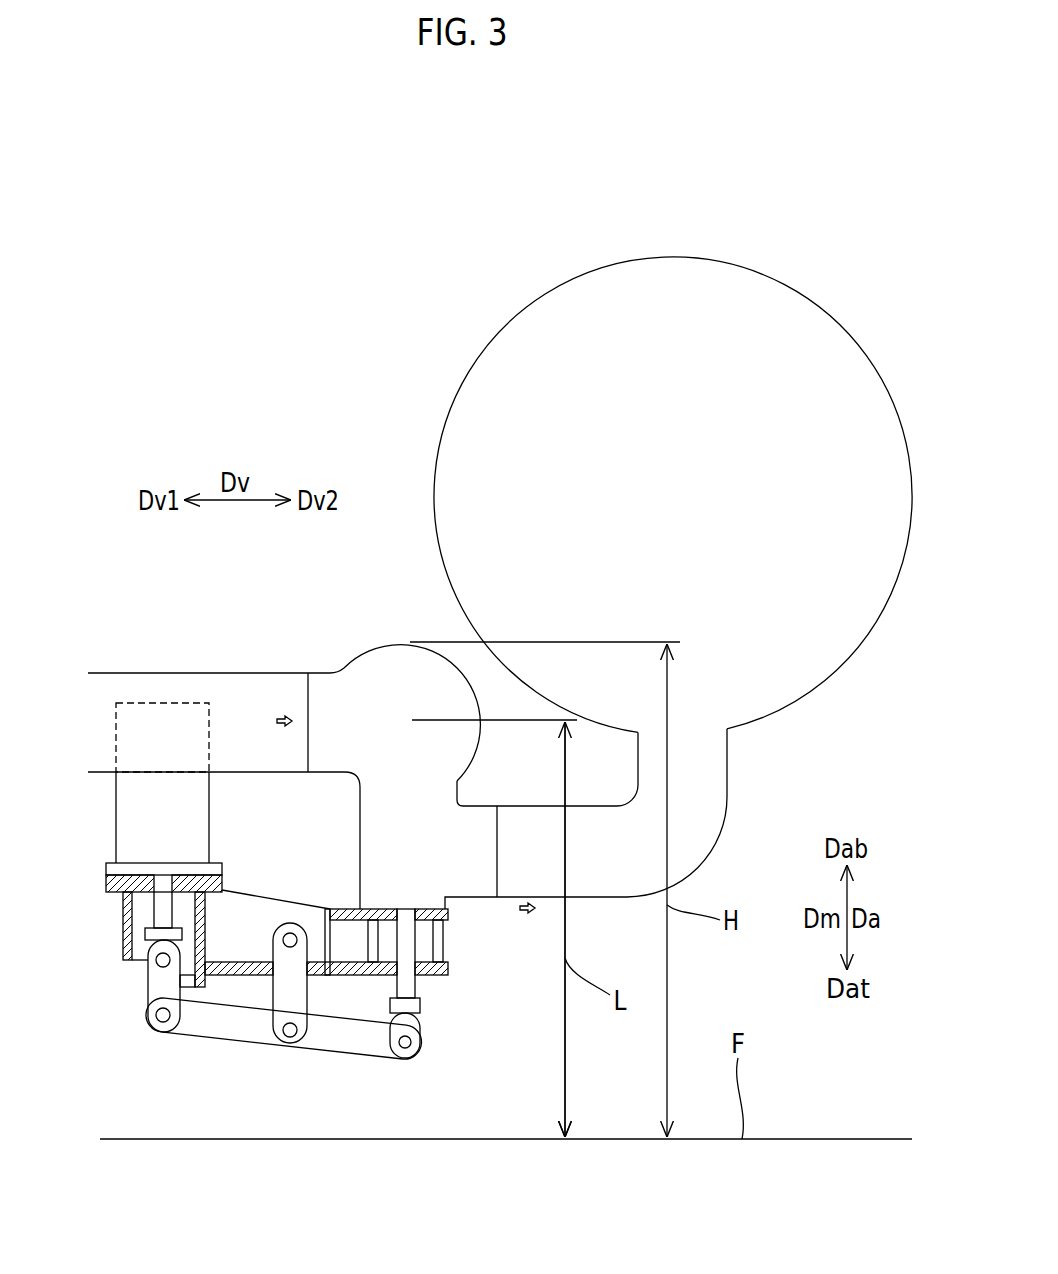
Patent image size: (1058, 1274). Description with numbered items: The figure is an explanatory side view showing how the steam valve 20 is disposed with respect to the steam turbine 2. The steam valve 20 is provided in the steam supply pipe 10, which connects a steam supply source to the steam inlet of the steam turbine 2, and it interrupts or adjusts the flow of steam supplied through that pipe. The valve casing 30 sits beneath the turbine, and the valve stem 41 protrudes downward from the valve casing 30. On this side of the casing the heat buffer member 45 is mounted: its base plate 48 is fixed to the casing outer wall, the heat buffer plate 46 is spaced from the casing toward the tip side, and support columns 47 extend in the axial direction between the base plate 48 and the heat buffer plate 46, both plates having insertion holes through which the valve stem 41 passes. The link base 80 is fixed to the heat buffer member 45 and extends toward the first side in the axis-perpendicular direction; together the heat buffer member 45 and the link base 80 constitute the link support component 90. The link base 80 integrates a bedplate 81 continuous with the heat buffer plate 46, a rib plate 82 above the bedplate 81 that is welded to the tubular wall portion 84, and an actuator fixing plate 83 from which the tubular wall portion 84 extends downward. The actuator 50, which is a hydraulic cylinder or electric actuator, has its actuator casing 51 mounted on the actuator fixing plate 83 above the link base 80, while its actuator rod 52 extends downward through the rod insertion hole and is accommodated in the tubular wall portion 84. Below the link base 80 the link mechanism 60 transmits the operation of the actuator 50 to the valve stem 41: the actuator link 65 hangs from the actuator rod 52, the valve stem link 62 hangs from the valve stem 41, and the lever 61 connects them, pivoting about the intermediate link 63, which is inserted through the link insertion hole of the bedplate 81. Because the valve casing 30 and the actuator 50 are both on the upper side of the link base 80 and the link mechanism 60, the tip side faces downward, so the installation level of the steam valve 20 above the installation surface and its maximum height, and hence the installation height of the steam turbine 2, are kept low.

The steam turbine 2 is at (826, 310).
The steam supply pipe 10 is at (580, 897).
The steam valve 20 is at (331, 646).
The valve casing 30 is at (383, 641).
The valve stem 41 is at (417, 987).
The heat buffer member 45 is at (451, 978).
The heat buffer plate 46 is at (448, 965).
The support column 47 is at (443, 938).
The base plate 48 is at (448, 915).
The actuator 50 is at (213, 788).
The actuator casing 51 is at (116, 727).
The actuator rod 52 is at (152, 910).
The link mechanism 60 is at (352, 1060).
The lever 61 is at (242, 1028).
The valve stem link 62 is at (418, 1023).
The intermediate link 63 is at (273, 990).
The actuator link 65 is at (145, 990).
The link base 80 is at (288, 899).
The bedplate 81 is at (235, 977).
The rib plate 82 is at (242, 903).
The actuator fixing plate 83 is at (105, 883).
The tubular wall portion 84 is at (122, 940).
The link support component 90 is at (366, 980).